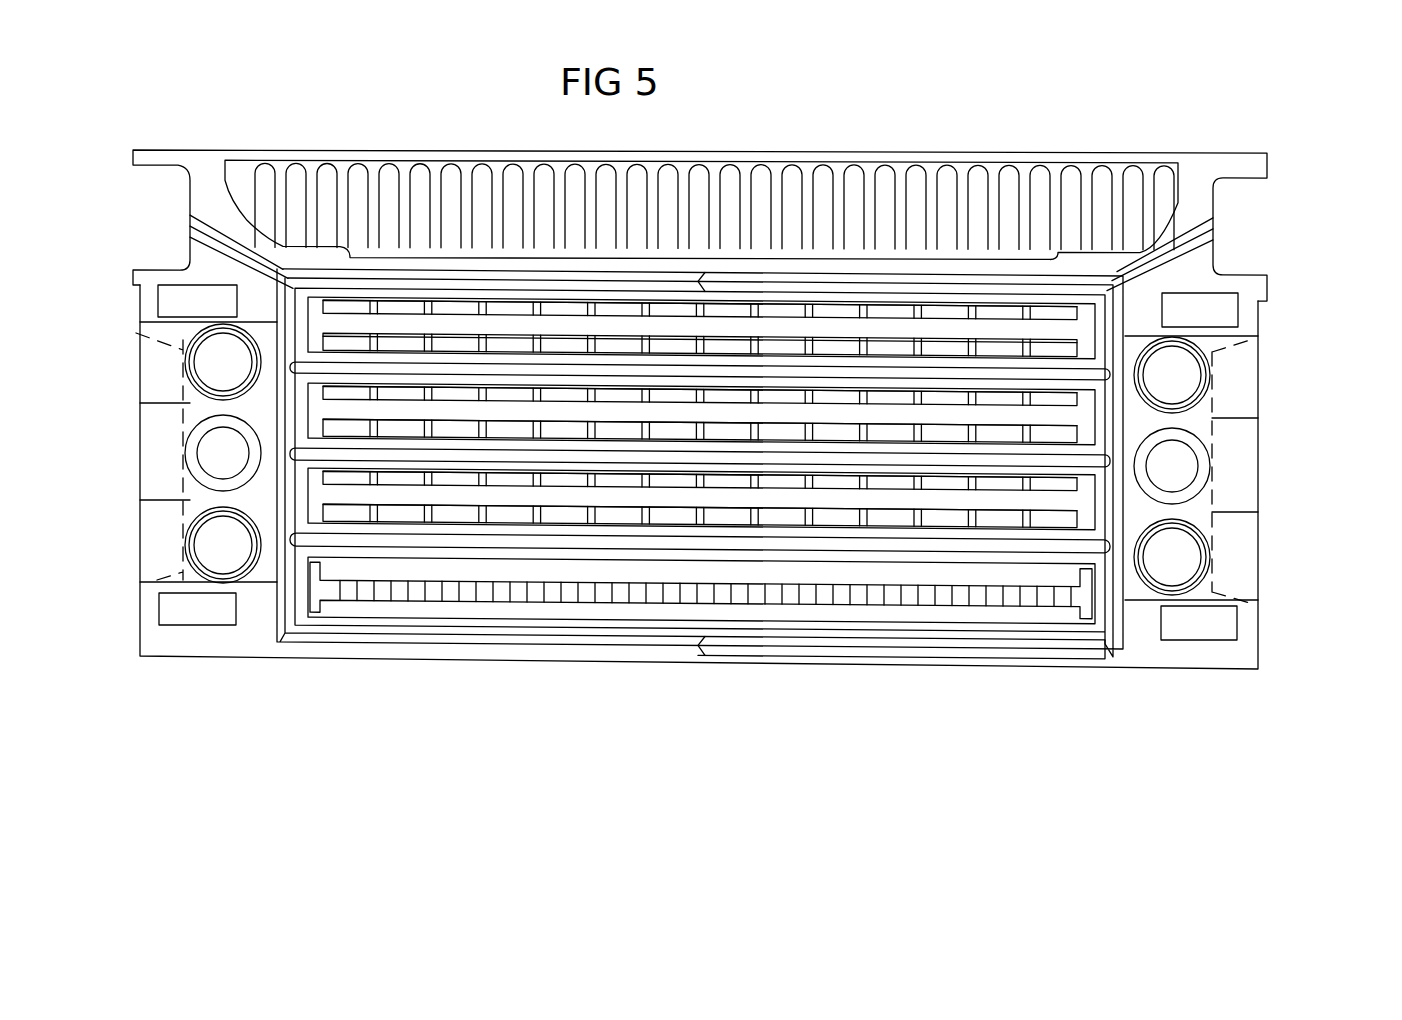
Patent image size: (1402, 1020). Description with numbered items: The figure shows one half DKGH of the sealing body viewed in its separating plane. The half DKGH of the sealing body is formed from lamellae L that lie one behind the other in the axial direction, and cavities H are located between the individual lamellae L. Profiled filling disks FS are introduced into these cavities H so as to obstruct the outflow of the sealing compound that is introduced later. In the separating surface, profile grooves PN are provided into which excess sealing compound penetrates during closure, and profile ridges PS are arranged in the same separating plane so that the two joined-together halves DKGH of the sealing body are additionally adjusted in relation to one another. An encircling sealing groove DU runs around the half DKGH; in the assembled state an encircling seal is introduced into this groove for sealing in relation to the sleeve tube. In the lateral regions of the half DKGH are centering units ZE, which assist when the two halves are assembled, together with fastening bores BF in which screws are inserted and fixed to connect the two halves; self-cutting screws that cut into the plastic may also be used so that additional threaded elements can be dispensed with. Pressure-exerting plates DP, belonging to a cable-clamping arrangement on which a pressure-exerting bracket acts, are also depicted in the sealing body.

The encircling sealing groove DU is at (1240, 216).
The half of the sealing body DKGH is at (1272, 350).
The fastening bores BF is at (228, 356).
The centering units ZE is at (228, 450).
The profile grooves PN is at (300, 647).
The pressure-exerting plates DP is at (357, 607).
The profiled filling disks FS is at (650, 320).
The profile ridges PS is at (748, 648).
The cavities H is at (745, 350).
The lamellae L is at (950, 380).